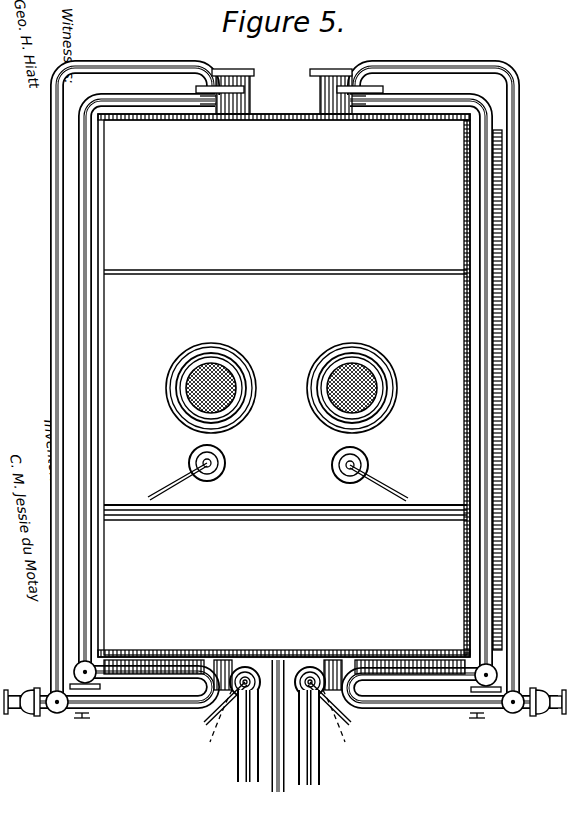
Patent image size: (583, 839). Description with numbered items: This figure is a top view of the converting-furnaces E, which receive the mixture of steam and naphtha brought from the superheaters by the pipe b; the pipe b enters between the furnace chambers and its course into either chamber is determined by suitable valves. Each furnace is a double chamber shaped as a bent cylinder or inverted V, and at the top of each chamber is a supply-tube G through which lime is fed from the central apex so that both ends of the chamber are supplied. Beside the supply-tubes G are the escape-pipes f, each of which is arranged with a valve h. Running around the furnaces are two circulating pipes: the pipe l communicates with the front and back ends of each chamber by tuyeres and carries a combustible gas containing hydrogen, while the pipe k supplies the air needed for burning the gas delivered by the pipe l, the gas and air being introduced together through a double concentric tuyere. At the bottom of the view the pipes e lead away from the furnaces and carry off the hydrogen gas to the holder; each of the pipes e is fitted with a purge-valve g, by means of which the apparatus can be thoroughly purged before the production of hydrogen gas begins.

The converting-furnace E is at (284, 385).
The supply-tube G is at (228, 343).
The valve h is at (222, 454).
The escape-pipe f is at (190, 465).
The air pipe k is at (285, 397).
The gas pipe l is at (285, 396).
The purge-valve g is at (273, 714).
The hydrogen pipe e is at (276, 737).
The pipe b is at (274, 732).